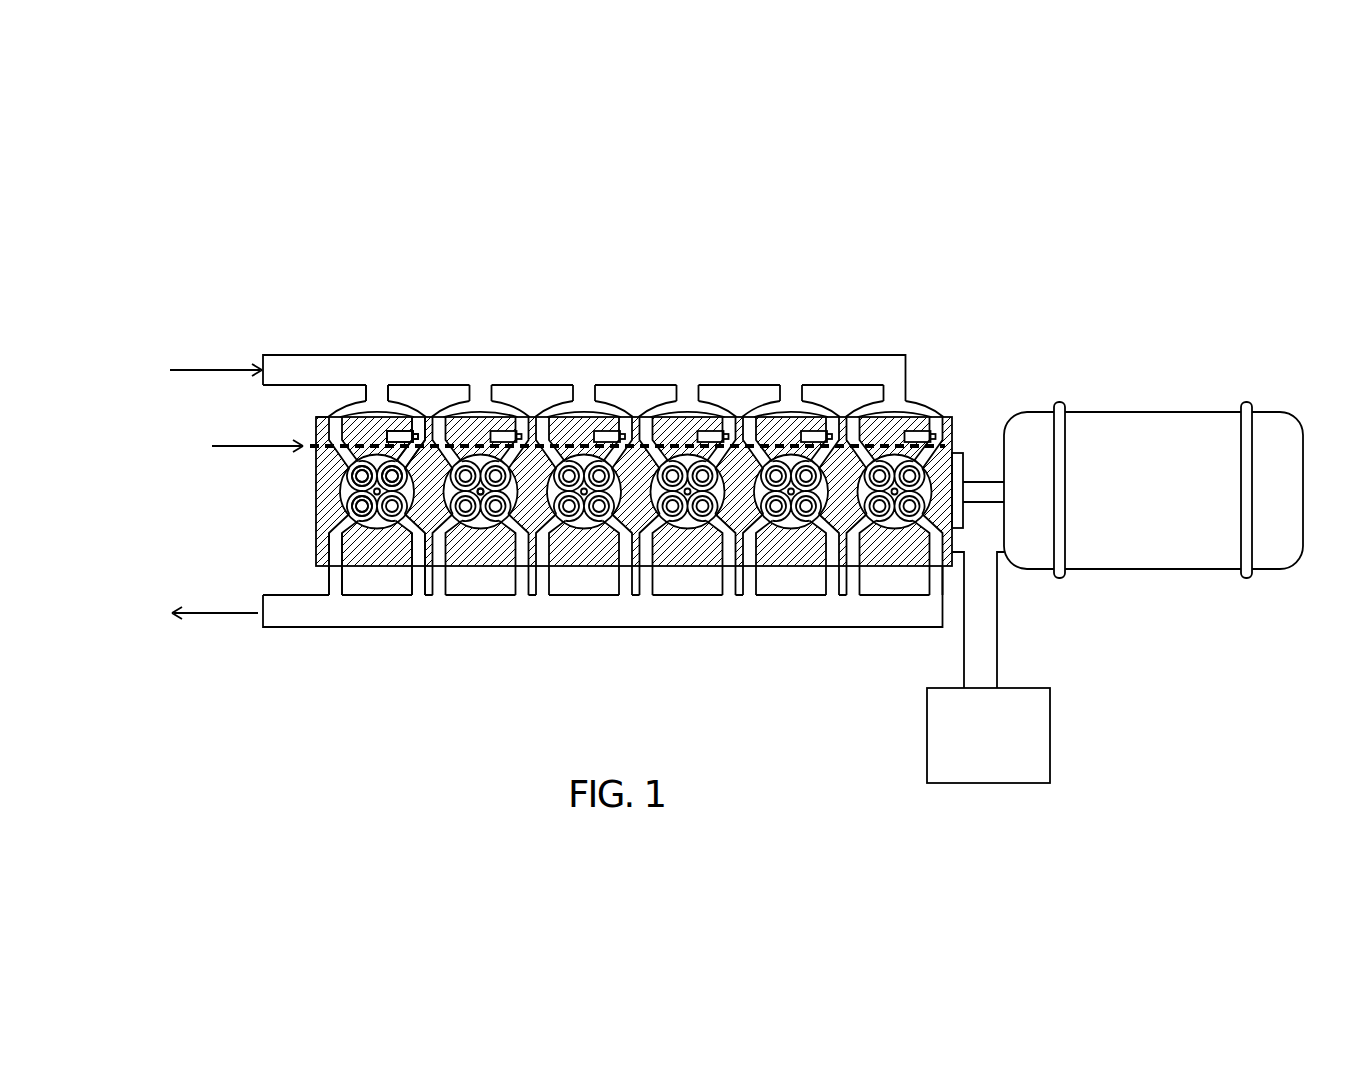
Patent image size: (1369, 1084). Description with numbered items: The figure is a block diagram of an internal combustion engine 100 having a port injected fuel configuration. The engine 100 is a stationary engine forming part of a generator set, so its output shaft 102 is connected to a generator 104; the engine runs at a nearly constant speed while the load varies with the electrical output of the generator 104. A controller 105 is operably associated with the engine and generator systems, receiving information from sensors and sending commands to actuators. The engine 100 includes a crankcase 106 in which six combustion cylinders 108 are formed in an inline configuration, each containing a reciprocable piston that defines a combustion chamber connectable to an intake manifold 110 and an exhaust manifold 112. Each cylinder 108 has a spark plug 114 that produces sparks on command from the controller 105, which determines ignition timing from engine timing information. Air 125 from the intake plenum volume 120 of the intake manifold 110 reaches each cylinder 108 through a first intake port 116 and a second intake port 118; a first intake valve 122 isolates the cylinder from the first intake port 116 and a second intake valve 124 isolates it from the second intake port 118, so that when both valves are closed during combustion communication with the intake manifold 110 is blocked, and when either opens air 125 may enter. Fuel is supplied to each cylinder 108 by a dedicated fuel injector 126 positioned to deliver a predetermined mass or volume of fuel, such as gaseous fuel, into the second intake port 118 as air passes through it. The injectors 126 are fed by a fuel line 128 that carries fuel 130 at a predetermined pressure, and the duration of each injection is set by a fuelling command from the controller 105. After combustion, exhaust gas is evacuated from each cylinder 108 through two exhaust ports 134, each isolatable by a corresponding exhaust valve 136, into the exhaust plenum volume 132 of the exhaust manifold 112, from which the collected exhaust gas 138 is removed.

The internal combustion engine 100 is at (506, 202).
The output shaft 102 is at (979, 488).
The generator 104 is at (1136, 443).
The controller 105 is at (1008, 747).
The crankcase 106 is at (591, 436).
The combustion cylinder 108 is at (350, 492).
The intake manifold 110 is at (298, 364).
The exhaust manifold 112 is at (428, 615).
The spark plug 114 is at (482, 495).
The first intake port 116 is at (322, 432).
The second intake port 118 is at (417, 423).
The intake plenum volume 120 is at (378, 388).
The first intake valve 122 is at (362, 476).
The second intake valve 124 is at (393, 476).
The air 125 is at (194, 370).
The fuel injector 126 is at (397, 435).
The fuel line 128 is at (310, 447).
The fuel 130 is at (235, 447).
The exhaust plenum volume 132 is at (643, 626).
The exhaust port 134 is at (418, 580).
The exhaust valve 136 is at (365, 506).
The exhaust gas 138 is at (192, 615).